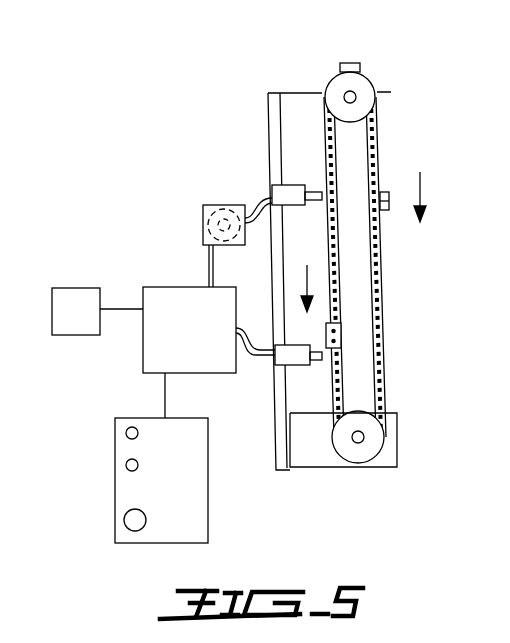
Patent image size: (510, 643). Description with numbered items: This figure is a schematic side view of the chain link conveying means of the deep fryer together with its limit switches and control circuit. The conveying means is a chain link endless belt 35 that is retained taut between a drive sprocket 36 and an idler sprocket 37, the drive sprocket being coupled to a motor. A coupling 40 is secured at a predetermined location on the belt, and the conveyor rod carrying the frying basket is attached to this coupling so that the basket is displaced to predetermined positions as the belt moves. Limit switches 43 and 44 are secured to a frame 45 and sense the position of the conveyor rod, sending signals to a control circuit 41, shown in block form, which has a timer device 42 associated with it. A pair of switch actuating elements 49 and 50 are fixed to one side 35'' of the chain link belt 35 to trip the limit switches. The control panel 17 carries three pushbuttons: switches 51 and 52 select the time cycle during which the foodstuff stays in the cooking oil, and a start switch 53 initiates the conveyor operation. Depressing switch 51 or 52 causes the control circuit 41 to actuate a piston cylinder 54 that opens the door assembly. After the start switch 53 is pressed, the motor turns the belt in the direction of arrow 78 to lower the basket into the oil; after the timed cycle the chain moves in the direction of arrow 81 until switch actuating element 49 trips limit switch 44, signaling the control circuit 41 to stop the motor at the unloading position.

The control panel 17 is at (160, 472).
The chain link endless belt 35 is at (405, 267).
The side of the chain link belt 35'' is at (386, 267).
The drive sprocket 36 is at (381, 444).
The idler sprocket 37 is at (364, 88).
The coupling 40 is at (385, 192).
The control circuit 41 is at (160, 345).
The timer device 42 is at (83, 288).
The limit switch 43 is at (291, 192).
The limit switch 44 is at (302, 358).
The frame 45 is at (300, 439).
The switch actuating element 49 is at (342, 337).
The switch actuating element 50 is at (343, 64).
The pushbutton switch 51 is at (126, 433).
The pushbutton switch 52 is at (126, 465).
The start switch 53 is at (129, 512).
The piston cylinder 54 is at (215, 205).
The arrow 78 is at (422, 186).
The arrow 81 is at (308, 277).